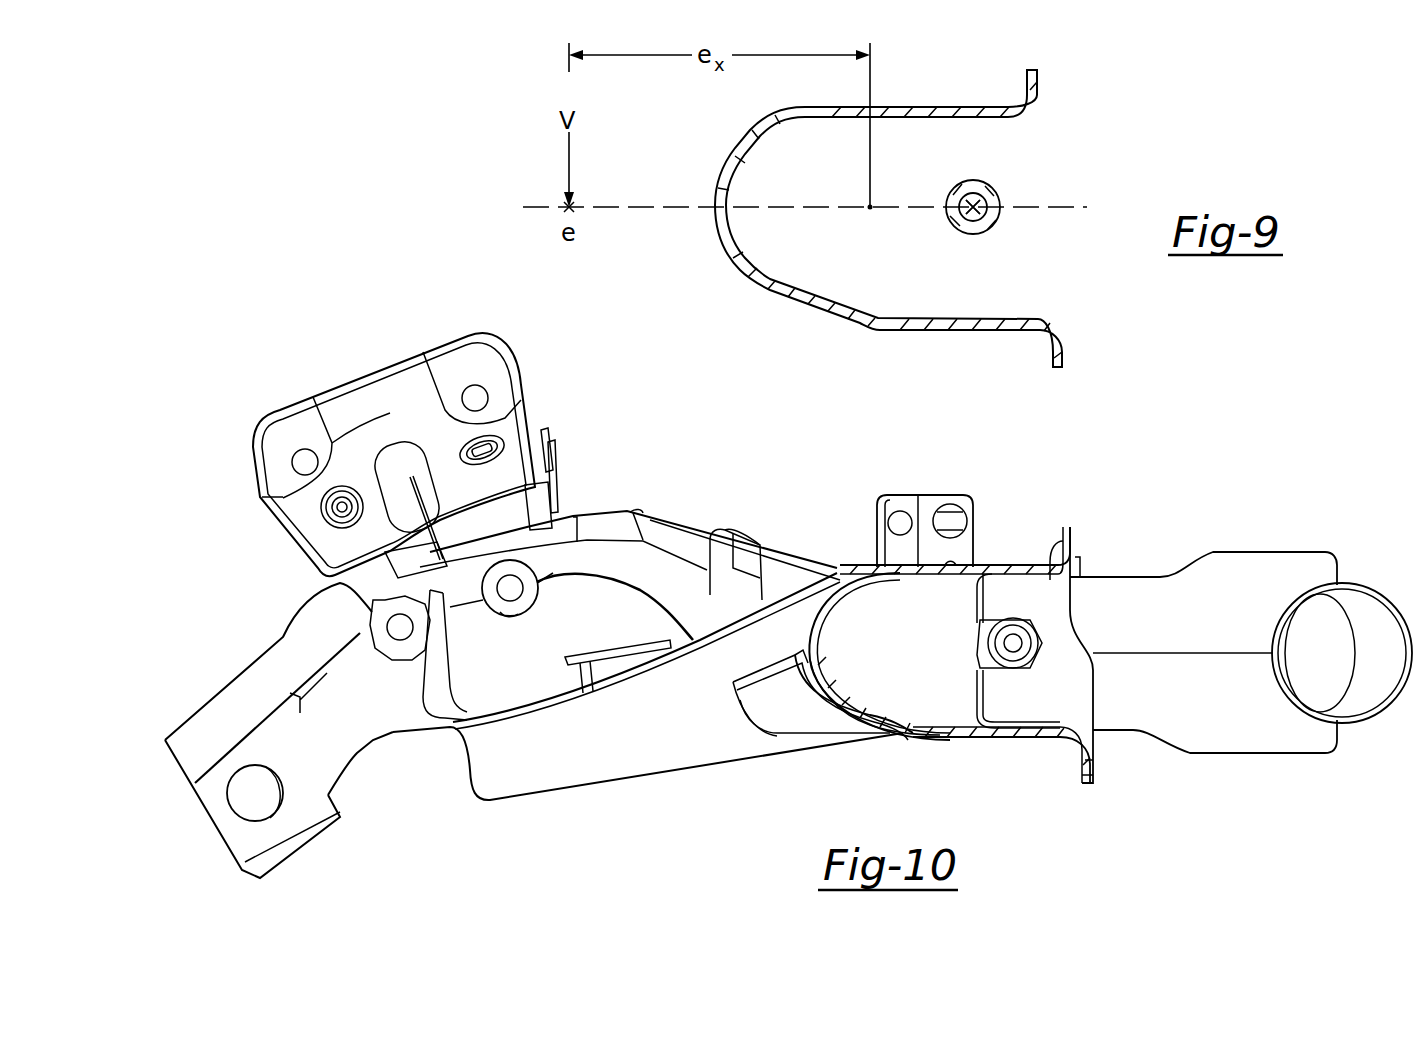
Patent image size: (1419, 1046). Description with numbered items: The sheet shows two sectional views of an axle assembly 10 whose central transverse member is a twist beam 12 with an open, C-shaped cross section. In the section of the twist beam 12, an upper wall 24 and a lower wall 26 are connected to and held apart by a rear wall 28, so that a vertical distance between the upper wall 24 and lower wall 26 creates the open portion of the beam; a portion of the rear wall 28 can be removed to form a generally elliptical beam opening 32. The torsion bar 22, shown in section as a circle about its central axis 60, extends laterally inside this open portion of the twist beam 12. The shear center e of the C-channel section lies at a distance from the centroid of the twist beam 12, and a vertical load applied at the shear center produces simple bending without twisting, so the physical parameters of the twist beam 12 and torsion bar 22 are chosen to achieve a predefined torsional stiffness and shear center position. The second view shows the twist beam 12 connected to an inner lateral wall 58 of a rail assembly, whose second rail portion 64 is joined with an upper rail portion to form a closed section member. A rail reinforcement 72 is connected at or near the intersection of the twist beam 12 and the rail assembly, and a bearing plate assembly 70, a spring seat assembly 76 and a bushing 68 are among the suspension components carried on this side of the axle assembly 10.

In FIG. 10, the axle assembly 10 is at (286, 359).
In FIG. 9, the twist beam 12 is at (740, 137).
In FIG. 10, the twist beam 12 is at (970, 743).
In FIG. 9, the torsion bar 22 is at (996, 200).
In FIG. 10, the torsion bar 22 is at (1032, 645).
In FIG. 10, the upper wall 24 is at (1017, 563).
In FIG. 10, the lower wall 26 is at (1032, 737).
In FIG. 10, the rear wall 28 is at (737, 697).
In FIG. 9, the beam opening 32 is at (716, 238).
In FIG. 10, the inner lateral wall 58 is at (732, 735).
In FIG. 9, the central axis 60 is at (972, 212).
In FIG. 10, the second rail portion 64 is at (1130, 583).
In FIG. 10, the bushing 68 is at (1348, 583).
In FIG. 10, the bearing plate assembly 70 is at (500, 388).
In FIG. 10, the rail reinforcement 72 is at (1087, 710).
In FIG. 10, the spring seat assembly 76 is at (512, 782).